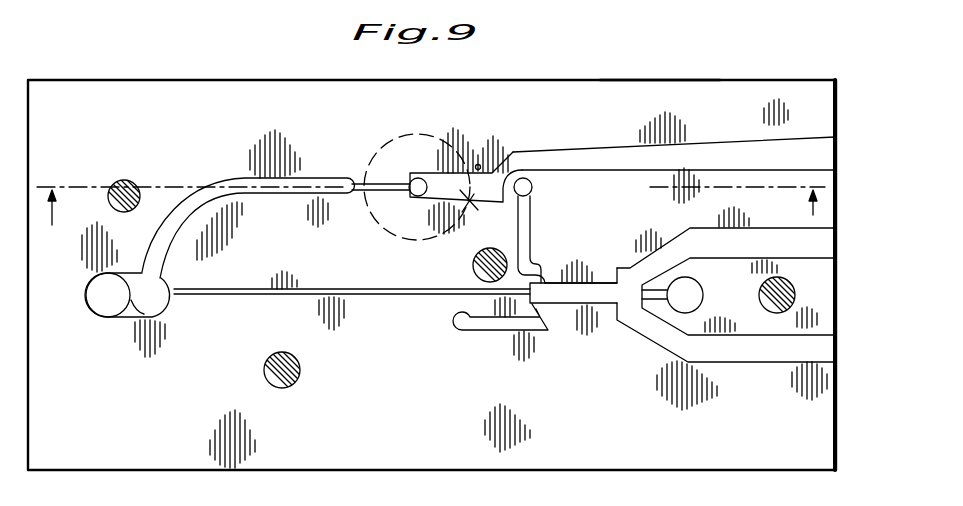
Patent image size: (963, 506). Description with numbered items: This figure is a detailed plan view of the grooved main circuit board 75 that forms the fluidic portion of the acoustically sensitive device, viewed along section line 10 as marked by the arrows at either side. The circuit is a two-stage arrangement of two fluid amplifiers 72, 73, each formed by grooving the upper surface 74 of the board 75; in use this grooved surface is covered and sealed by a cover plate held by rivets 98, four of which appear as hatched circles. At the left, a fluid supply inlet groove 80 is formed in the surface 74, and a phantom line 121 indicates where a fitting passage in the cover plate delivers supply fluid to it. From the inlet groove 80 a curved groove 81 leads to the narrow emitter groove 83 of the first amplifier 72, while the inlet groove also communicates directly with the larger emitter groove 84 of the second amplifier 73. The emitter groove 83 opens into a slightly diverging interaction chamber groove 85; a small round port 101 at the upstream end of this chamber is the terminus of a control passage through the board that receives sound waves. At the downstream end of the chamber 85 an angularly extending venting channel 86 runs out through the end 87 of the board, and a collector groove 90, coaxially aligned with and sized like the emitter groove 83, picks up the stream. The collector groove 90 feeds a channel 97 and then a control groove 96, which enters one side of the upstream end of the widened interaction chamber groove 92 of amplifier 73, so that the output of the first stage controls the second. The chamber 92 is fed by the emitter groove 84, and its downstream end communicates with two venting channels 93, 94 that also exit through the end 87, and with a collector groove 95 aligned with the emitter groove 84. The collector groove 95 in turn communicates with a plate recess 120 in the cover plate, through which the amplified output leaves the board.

The section line 10- 10 is at (431, 224).
The fluid amplifier 72 is at (478, 166).
The fluid amplifier 73 is at (577, 318).
The upper surface 74 is at (402, 439).
The main circuit board 75 is at (657, 60).
The fluid supply inlet groove 80 is at (166, 279).
The groove 81 is at (305, 180).
The emitter groove 83 is at (370, 190).
The emitter groove 84 is at (360, 288).
The interaction chamber groove 85 is at (474, 208).
The venting channel 86 is at (514, 156).
The end 87 is at (836, 90).
The collector groove 90 is at (533, 178).
The interaction chamber groove 92 is at (556, 282).
The venting channel 93 is at (653, 261).
The venting channel 94 is at (660, 342).
The collector groove 95 is at (668, 284).
The control groove 96 is at (544, 280).
The channel 97 is at (534, 206).
The rivets 98 is at (160, 165).
The round port 101 is at (418, 197).
The plate recess 120 is at (699, 292).
The phantom line 121 is at (128, 322).